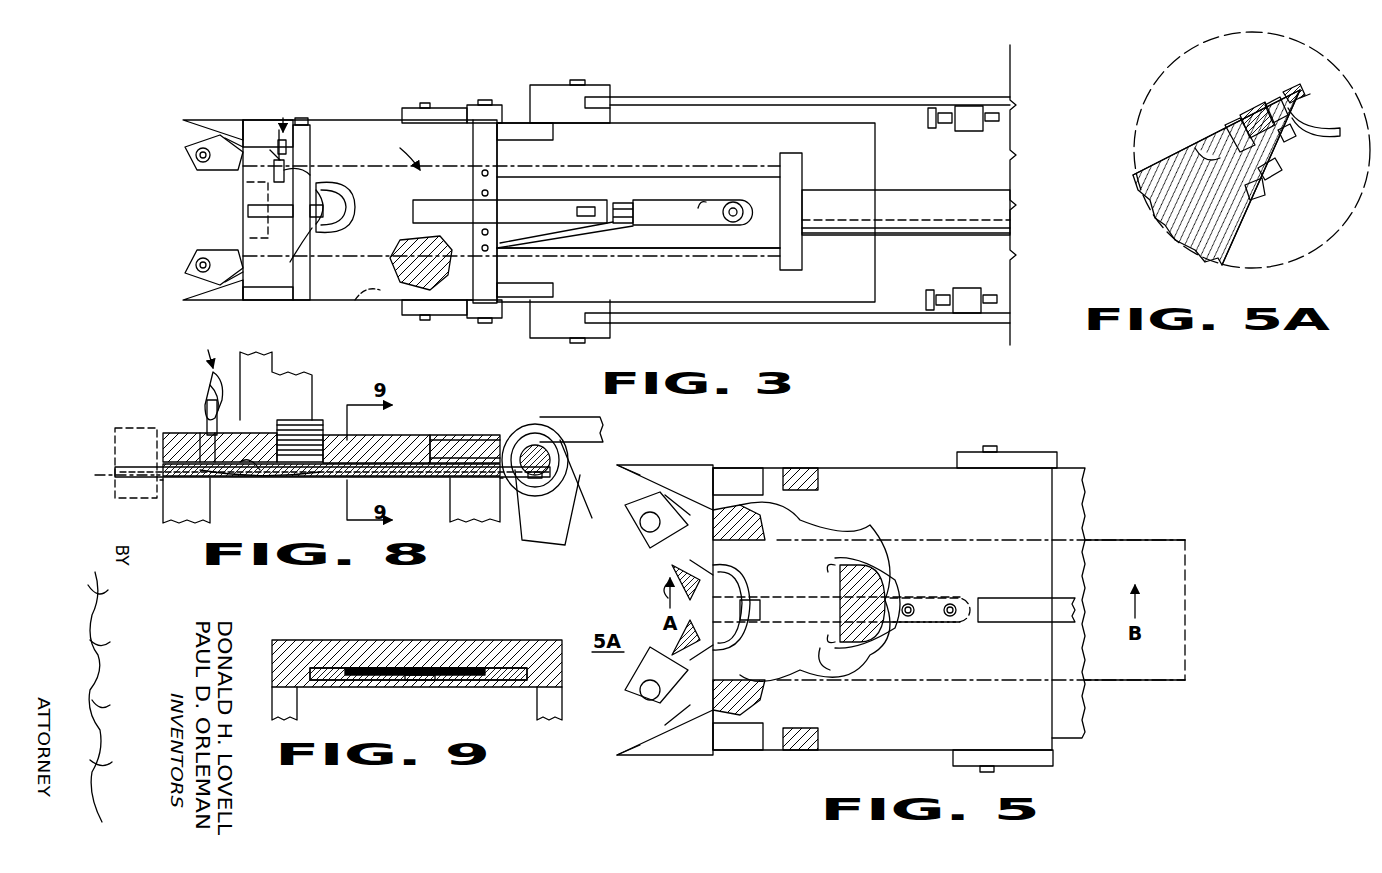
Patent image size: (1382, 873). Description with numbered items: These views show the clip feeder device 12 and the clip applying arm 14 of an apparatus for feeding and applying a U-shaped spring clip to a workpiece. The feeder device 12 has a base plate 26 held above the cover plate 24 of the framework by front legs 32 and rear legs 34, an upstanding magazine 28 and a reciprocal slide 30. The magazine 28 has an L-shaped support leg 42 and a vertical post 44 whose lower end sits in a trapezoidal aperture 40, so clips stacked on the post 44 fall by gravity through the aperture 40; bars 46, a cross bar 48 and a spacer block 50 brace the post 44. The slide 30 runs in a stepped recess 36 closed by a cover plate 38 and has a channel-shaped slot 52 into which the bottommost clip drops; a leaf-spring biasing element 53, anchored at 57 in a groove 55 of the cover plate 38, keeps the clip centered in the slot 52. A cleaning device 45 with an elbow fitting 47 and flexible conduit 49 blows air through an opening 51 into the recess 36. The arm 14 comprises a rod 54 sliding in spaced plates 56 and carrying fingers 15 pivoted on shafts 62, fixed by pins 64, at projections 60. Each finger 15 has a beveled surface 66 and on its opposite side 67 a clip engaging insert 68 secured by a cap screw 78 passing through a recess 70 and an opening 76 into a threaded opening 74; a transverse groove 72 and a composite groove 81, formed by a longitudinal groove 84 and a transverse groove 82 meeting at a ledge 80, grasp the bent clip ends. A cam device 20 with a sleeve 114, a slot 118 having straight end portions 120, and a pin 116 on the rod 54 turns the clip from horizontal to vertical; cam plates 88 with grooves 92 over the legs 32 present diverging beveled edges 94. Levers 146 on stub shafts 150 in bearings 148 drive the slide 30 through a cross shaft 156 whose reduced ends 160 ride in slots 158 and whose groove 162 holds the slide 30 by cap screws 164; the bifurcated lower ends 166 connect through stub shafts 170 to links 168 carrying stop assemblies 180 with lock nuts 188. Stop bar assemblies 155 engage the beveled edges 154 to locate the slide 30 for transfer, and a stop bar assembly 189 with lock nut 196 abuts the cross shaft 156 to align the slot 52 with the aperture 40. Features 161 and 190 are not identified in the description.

In FIG. 3, the clip feeder device 12 is at (362, 148).
In FIG. 8, the clip feeder device 12 is at (408, 445).
In FIG. 9, the clip feeder device 12 is at (485, 640).
In FIG. 3, the clip applying arm 14 is at (990, 192).
In FIG. 3, the fingers 15 is at (200, 240).
In FIG. 5A, the fingers 15 is at (1235, 225).
In FIG. 8, the fingers 15 is at (130, 435).
In FIG. 5, the fingers 15 is at (660, 548).
In FIG. 3, the cam device 20 is at (685, 175).
In FIG. 3, the cover plate 24 is at (667, 289).
In FIG. 5, the cover plate 24 is at (1085, 502).
In FIG. 3, the base plate 26 is at (325, 291).
In FIG. 8, the base plate 26 is at (350, 445).
In FIG. 9, the base plate 26 is at (330, 648).
In FIG. 5, the base plate 26 is at (985, 511).
In FIG. 3, the magazine 28 is at (300, 125).
In FIG. 3, the slide 30 is at (400, 245).
In FIG. 8, the slide 30 is at (470, 445).
In FIG. 9, the slide 30 is at (450, 668).
In FIG. 5, the slide 30 is at (1060, 660).
In FIG. 3, the legs 32 is at (262, 120).
In FIG. 8, the legs 32 is at (170, 518).
In FIG. 5, the legs 32 is at (730, 470).
In FIG. 8, the legs 34 is at (480, 520).
In FIG. 9, the legs 34 is at (297, 705).
In FIG. 3, the recess 36 is at (405, 148).
In FIG. 8, the recess 36 is at (450, 440).
In FIG. 9, the recess 36 is at (385, 655).
In FIG. 8, the cover plate 38 is at (465, 485).
In FIG. 9, the cover plate 38 is at (360, 690).
In FIG. 3, the aperture 40 is at (340, 190).
In FIG. 8, the aperture 40 is at (250, 478).
In FIG. 3, the L-shaped support leg 42 is at (248, 226).
In FIG. 8, the L-shaped support leg 42 is at (280, 385).
In FIG. 3, the vertical post 44 is at (352, 222).
In FIG. 8, the vertical post 44 is at (320, 425).
In FIG. 5, the vertical post 44 is at (858, 568).
In FIG. 3, the cleaning device 45 is at (270, 150).
In FIG. 8, the cleaning device 45 is at (195, 405).
In FIG. 3, the bars 46 is at (300, 124).
In FIG. 5, the bars 46 is at (800, 470).
In FIG. 3, the elbow-shaped tubular fitting 47 is at (292, 180).
In FIG. 8, the elbow-shaped tubular fitting 47 is at (205, 430).
In FIG. 3, the cross bar 48 is at (278, 145).
In FIG. 3, the flexible conduit 49 is at (281, 116).
In FIG. 8, the flexible conduit 49 is at (210, 385).
In FIG. 3, the spacer block 50 is at (290, 245).
In FIG. 8, the opening 51 is at (195, 445).
In FIG. 5, the slot 52 is at (830, 675).
In FIG. 8, the biasing element 53 is at (300, 478).
In FIG. 9, the biasing element 53 is at (405, 690).
In FIG. 5, the biasing element 53 is at (815, 600).
In FIG. 3, the rod 54 is at (905, 219).
In FIG. 9, the groove 55 is at (440, 690).
In FIG. 5, the groove 55 is at (745, 600).
In FIG. 3, the plates 56 is at (800, 163).
In FIG. 8, the anchor point 57 is at (390, 485).
In FIG. 5, the anchor point 57 is at (950, 600).
In FIG. 3, the projections 60 is at (192, 165).
In FIG. 5, the projections 60 is at (628, 505).
In FIG. 3, the shaft 62 is at (195, 157).
In FIG. 5, the shaft 62 is at (640, 526).
In FIG. 3, the pins 64 is at (230, 140).
In FIG. 5, the pins 64 is at (665, 495).
In FIG. 5A, the beveled surfaces 66 is at (1232, 250).
In FIG. 5, the beveled surfaces 66 is at (725, 520).
In FIG. 5A, the side 67 is at (1172, 165).
In FIG. 5, the side 67 is at (672, 568).
In FIG. 5A, the clip engaging insert 68 is at (1255, 110).
In FIG. 5, the clip engaging insert 68 is at (700, 580).
In FIG. 5A, the recess 70 is at (1262, 190).
In FIG. 5A, the transverse groove 72 is at (1292, 135).
In FIG. 5A, the threaded opening 74 is at (1232, 125).
In FIG. 5A, the opening 76 is at (1205, 152).
In FIG. 5A, the cap screw 78 is at (1278, 170).
In FIG. 5A, the common ledge 80 is at (1298, 90).
In FIG. 5A, the composite groove 81 is at (1312, 100).
In FIG. 5A, the closed end groove 82 is at (1275, 102).
In FIG. 5A, the groove 84 is at (1325, 125).
In FIG. 3, the cam plates 88 is at (205, 120).
In FIG. 5, the cam plates 88 is at (660, 465).
In FIG. 5, the groove 92 is at (750, 462).
In FIG. 5, the beveled edges 94 is at (633, 465).
In FIG. 3, the sleeve 114 is at (725, 250).
In FIG. 3, the pin 116 is at (740, 203).
In FIG. 3, the elongated slot 118 is at (650, 200).
In FIG. 3, the straight end portions 120 is at (703, 205).
In FIG. 3, the levers 146 is at (548, 100).
In FIG. 3, the bearings 148 is at (553, 131).
In FIG. 3, the stub shaft 150 is at (510, 104).
In FIG. 8, the beveled edge portions 154 is at (528, 495).
In FIG. 3, the stop bar assemblies 155 is at (440, 110).
In FIG. 5, the stop bar assemblies 155 is at (960, 460).
In FIG. 3, the cross shaft 156 is at (482, 148).
In FIG. 8, the cross shaft 156 is at (548, 440).
In FIG. 8, the elongate slot 158 is at (530, 425).
In FIG. 3, the reduced outer ends 160 is at (484, 98).
In FIG. 8, the reduced outer ends 160 is at (550, 455).
In FIG. 3, the recess 161 is at (358, 300).
In FIG. 8, the channel-shaped groove 162 is at (548, 478).
In FIG. 3, the cap screws 164 is at (495, 175).
In FIG. 8, the cap screws 164 is at (540, 490).
In FIG. 3, the bifurcated lower ends 166 is at (600, 96).
In FIG. 3, the links 168 is at (770, 104).
In FIG. 3, the stub shaft 170 is at (577, 78).
In FIG. 3, the stop assemblies 180 is at (968, 132).
In FIG. 3, the lock nut 188 is at (960, 112).
In FIG. 3, the stop bar assembly 189 is at (555, 200).
In FIG. 5, the stop bar assembly 189 is at (1018, 600).
In FIG. 8, the block 190 is at (590, 420).
In FIG. 3, the lock nut 196 is at (618, 205).